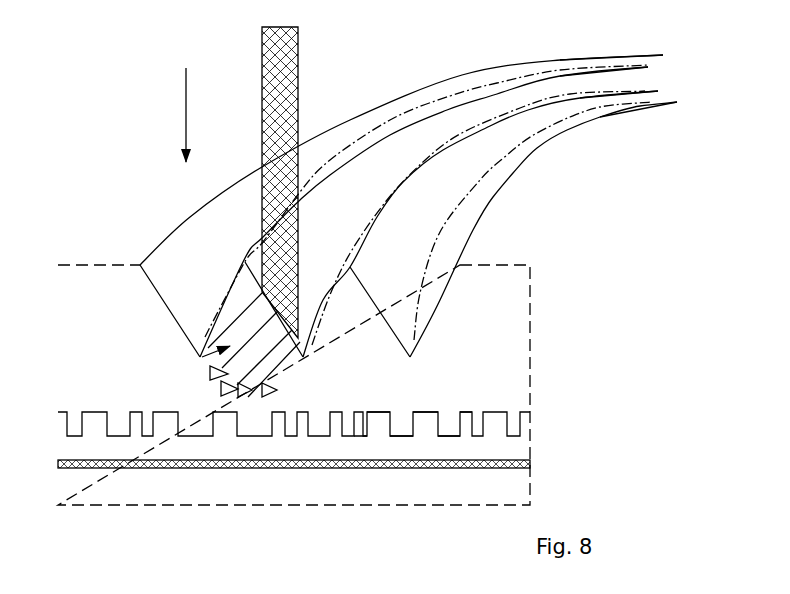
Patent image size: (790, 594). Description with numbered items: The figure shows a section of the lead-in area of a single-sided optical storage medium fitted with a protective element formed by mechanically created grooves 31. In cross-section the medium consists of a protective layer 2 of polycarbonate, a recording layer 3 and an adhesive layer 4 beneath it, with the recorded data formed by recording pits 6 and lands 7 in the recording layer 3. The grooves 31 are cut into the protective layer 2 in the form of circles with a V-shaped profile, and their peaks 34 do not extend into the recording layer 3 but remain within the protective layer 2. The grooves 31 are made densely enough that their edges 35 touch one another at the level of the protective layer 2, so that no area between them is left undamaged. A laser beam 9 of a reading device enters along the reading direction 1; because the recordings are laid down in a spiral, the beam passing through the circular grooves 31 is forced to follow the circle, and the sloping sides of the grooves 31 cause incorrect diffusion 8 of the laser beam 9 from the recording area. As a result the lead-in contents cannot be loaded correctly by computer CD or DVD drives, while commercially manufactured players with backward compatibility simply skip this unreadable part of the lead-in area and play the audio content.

The direction of the laser beam 1 is at (174, 115).
The protective layer 2 is at (294, 385).
The recording layer 3 is at (533, 420).
The adhesive layer 4 is at (533, 463).
The recording pits 6 is at (380, 412).
The lands 7 is at (363, 436).
The incorrect diffusion of the laser beam 8 is at (232, 350).
The laser beam 9 is at (280, 170).
The grooves 31 is at (458, 157).
The peaks of the grooves 34 is at (345, 157).
The edges of the grooves 35 is at (565, 128).